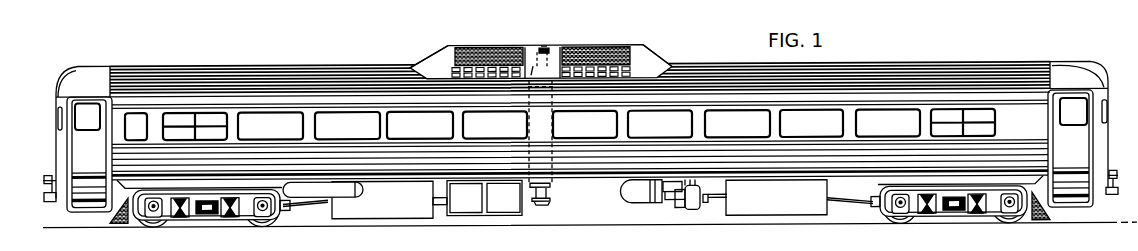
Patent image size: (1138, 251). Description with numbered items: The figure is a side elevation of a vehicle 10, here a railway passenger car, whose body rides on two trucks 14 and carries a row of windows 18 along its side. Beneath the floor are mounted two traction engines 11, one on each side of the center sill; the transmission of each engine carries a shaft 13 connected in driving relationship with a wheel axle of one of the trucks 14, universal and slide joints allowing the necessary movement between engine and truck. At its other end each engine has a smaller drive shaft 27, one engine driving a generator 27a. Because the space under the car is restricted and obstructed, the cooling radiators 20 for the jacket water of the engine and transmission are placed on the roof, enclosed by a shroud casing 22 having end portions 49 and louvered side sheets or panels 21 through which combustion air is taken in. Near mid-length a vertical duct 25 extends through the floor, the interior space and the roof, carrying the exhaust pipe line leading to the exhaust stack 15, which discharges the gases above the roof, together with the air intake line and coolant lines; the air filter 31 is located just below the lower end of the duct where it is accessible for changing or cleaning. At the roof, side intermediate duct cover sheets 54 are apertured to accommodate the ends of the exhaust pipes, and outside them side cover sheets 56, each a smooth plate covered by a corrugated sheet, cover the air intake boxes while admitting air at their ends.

The vehicle 10 is at (884, 62).
The traction engine 11 is at (782, 212).
The shaft 13 is at (860, 204).
The truck 14 is at (964, 222).
The exhaust stack 15 is at (548, 54).
The window 18 is at (669, 134).
The cooling radiator 20 is at (589, 58).
The side sheet or panel 21 is at (613, 76).
The shroud casing 22 is at (433, 62).
The vertical duct 25 is at (528, 98).
The generator 27 is at (718, 199).
The generator 27a is at (678, 203).
The air filter 31 is at (548, 197).
The sloped end wall 49 is at (650, 66).
The side intermediate duct cover sheet 54 is at (545, 47).
The side cover sheet 56 is at (532, 73).